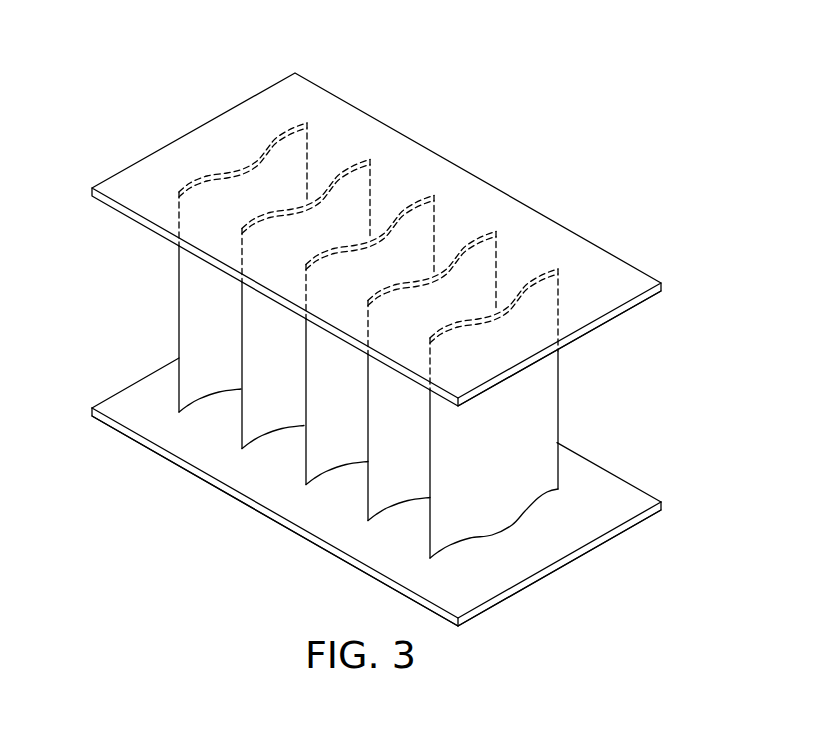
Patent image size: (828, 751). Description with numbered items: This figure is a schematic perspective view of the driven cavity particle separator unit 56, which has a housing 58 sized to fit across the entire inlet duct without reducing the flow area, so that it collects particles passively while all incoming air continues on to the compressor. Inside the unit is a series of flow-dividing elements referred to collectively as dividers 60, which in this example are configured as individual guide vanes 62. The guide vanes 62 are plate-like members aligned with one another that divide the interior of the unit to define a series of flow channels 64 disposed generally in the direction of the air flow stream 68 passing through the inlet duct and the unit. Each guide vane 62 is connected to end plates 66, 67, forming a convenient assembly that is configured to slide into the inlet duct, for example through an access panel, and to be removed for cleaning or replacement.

The driven cavity particle separator unit 56 is at (398, 110).
The housing 58 is at (137, 443).
The dividers 60 is at (502, 242).
The guide vanes 62 is at (308, 467).
The flow channels 64 is at (397, 180).
The end plate 66 is at (617, 535).
The end plate 67 is at (632, 308).
The air flow stream 68 is at (307, 545).